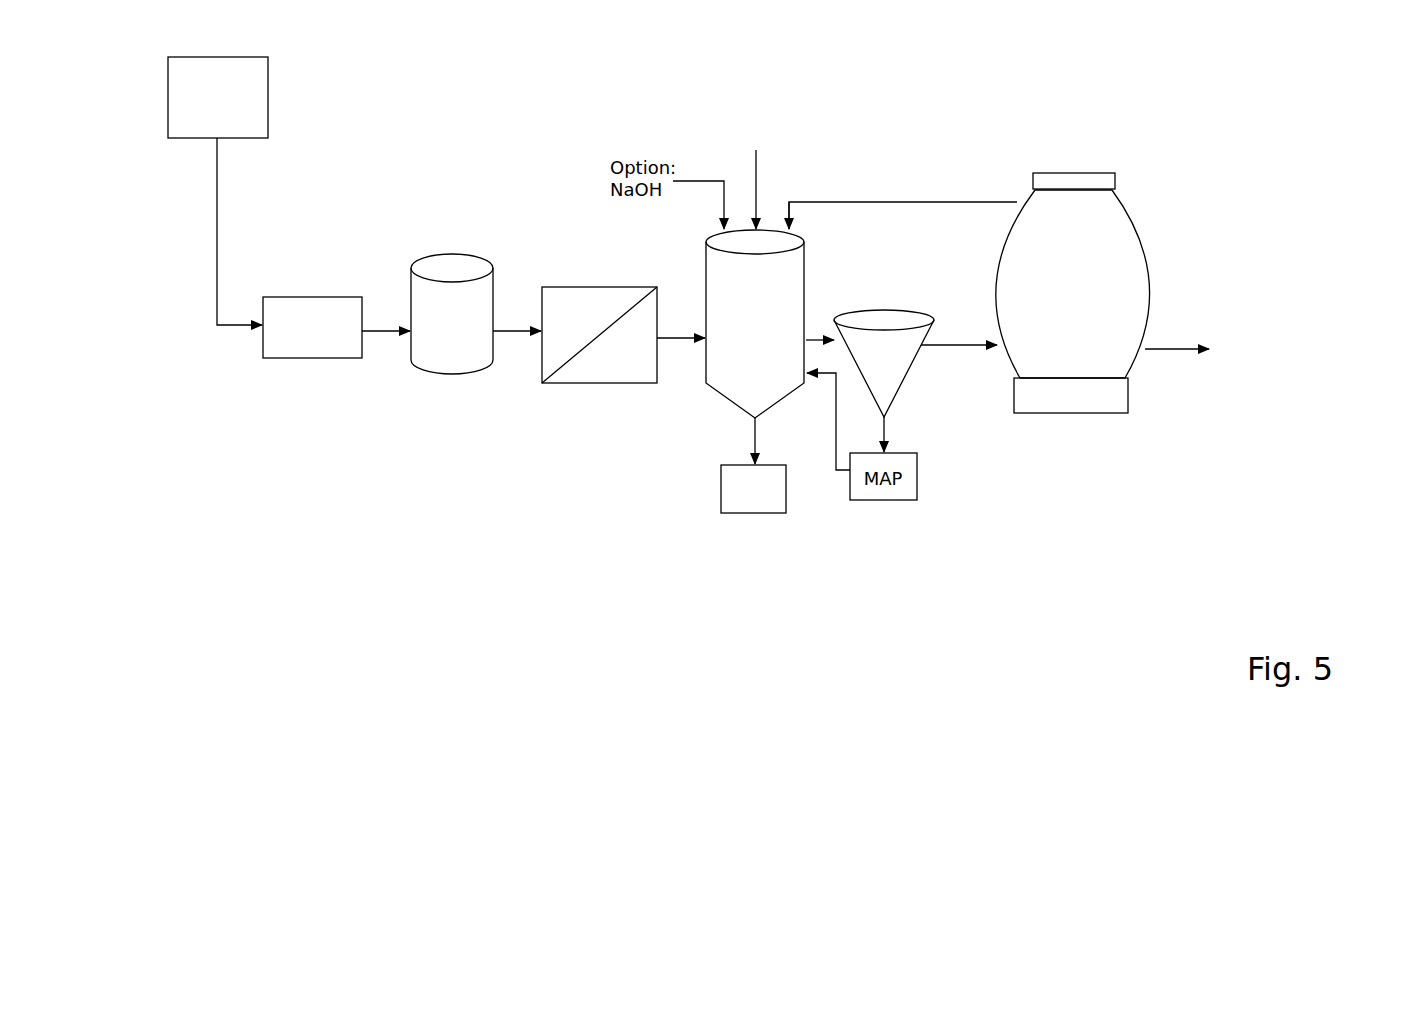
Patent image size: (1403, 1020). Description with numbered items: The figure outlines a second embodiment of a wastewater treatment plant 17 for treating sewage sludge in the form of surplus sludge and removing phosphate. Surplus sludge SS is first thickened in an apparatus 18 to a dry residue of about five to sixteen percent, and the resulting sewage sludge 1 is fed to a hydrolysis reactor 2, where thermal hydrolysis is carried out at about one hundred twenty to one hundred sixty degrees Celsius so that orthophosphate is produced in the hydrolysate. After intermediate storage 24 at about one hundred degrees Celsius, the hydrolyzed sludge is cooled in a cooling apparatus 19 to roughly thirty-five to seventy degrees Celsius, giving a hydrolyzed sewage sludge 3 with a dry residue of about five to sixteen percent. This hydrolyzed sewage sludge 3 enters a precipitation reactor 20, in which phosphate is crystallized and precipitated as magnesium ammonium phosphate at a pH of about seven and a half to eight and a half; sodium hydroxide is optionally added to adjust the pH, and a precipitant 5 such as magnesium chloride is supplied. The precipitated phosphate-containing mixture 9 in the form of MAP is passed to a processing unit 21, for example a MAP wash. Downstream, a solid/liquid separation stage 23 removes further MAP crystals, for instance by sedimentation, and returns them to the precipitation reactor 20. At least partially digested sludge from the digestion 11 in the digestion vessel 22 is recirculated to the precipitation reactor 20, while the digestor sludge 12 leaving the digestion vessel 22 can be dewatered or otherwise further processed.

The apparatus for thickening surplus sludge 18 is at (218, 97).
The sewage sludge 1 is at (270, 248).
The hydrolysis reactor 2 is at (309, 344).
The flash tank 24 is at (452, 258).
The cooling apparatus 19 is at (584, 287).
The wastewater treatment plant 17 is at (550, 124).
The hydrolyzed sewage sludge 3 is at (681, 324).
The precipitant 5 is at (764, 174).
The precipitation reactor 20 is at (806, 266).
The phosphate-containing mixture 9 is at (815, 440).
The processing unit 21 is at (753, 489).
The solid/liquid separation stage 23 is at (885, 310).
The digestion 11 is at (1073, 293).
The digestion vessel 22 is at (1148, 256).
The digestor sludge 12 is at (1177, 335).